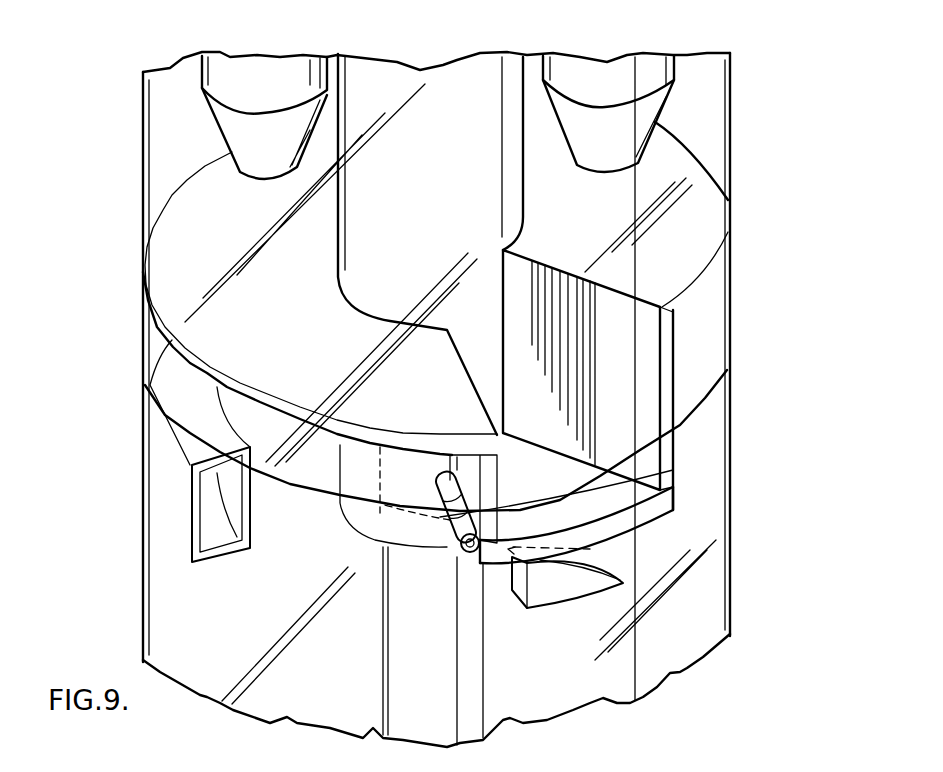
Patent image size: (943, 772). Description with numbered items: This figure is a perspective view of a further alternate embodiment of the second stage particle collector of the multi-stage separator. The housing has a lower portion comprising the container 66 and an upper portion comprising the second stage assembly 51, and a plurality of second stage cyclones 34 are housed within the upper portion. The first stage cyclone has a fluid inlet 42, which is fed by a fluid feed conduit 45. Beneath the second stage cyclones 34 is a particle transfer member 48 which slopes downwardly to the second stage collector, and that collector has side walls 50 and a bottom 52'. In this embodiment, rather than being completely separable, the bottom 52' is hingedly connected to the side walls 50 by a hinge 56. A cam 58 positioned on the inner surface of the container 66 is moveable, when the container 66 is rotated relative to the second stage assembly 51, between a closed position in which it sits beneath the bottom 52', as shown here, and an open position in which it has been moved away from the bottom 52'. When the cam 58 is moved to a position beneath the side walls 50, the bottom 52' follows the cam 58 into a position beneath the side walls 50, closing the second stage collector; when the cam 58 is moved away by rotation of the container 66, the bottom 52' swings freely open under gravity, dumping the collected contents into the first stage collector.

The second stage cyclones 34 is at (674, 77).
The fluid inlet 42 is at (212, 533).
The fluid feed conduit 45 is at (400, 713).
The particle transfer member 48 is at (693, 231).
The side walls 50 is at (673, 375).
The second stage assembly 51 is at (730, 140).
The bottom 52' is at (468, 466).
The hinge 56 is at (452, 540).
The cam 58 is at (573, 590).
The container 66 is at (730, 618).